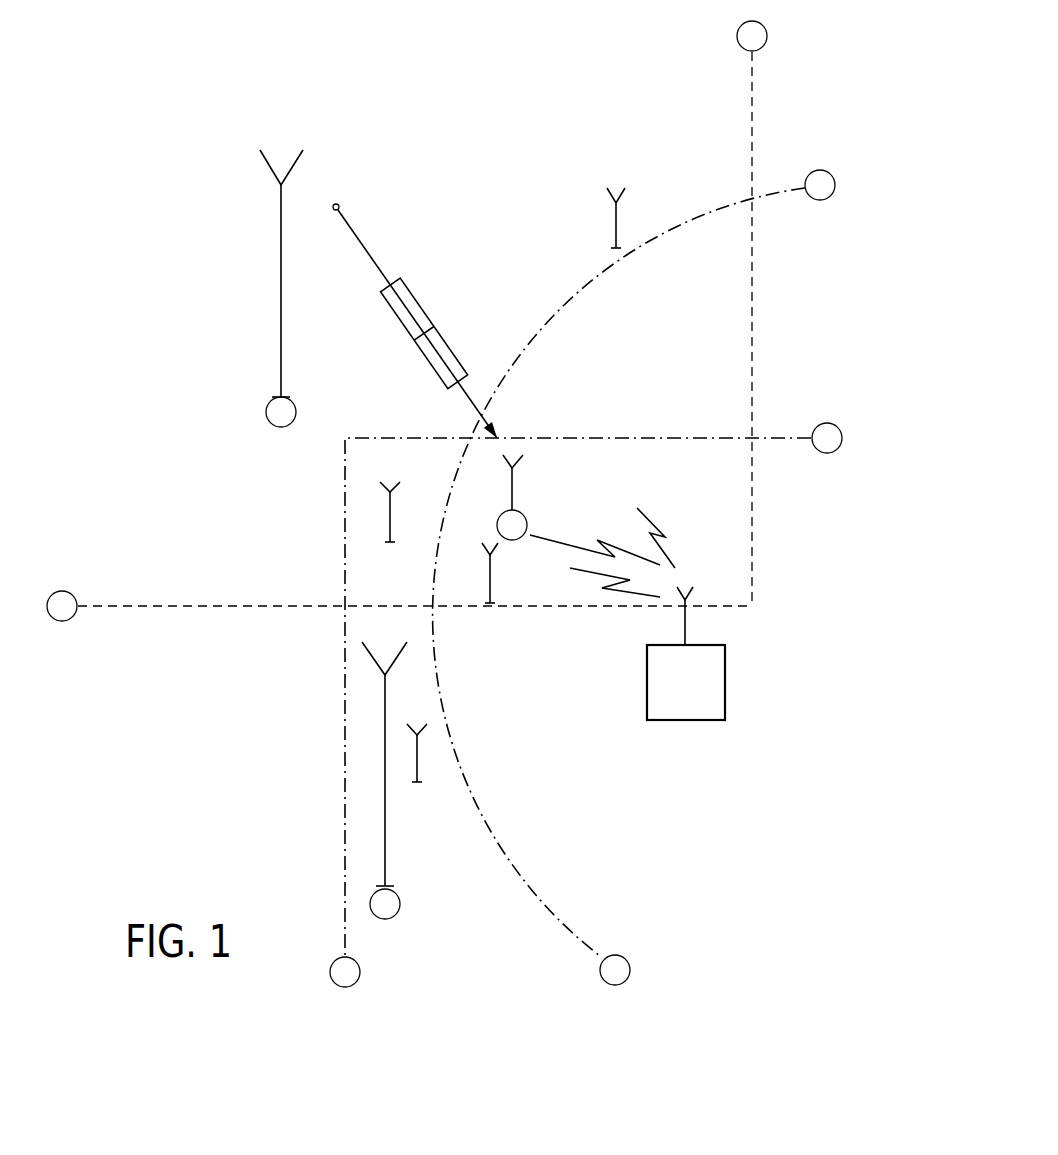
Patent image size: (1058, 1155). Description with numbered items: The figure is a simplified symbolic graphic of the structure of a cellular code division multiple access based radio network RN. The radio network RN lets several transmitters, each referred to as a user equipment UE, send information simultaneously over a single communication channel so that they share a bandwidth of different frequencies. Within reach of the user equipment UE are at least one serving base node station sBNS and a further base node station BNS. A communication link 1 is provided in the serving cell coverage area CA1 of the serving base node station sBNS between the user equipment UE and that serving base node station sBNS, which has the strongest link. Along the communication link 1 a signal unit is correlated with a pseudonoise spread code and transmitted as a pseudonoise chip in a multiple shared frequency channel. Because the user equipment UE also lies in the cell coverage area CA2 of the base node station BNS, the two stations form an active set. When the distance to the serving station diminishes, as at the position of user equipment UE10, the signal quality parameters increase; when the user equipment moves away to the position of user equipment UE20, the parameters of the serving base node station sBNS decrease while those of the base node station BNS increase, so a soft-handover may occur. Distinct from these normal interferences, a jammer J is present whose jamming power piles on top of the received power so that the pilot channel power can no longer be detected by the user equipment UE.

The radio network RN is at (270, 57).
The communication link 1 is at (363, 238).
The serving base node station sBNS is at (281, 323).
The further base node station BNS is at (385, 812).
The user equipment UE is at (616, 232).
The user equipment at position 10 UE10 is at (390, 515).
The user equipment at position 20 UE20 is at (417, 758).
The serving cell coverage area CA1 is at (538, 257).
The cell coverage area CA2 is at (701, 824).
The jammer J is at (627, 630).